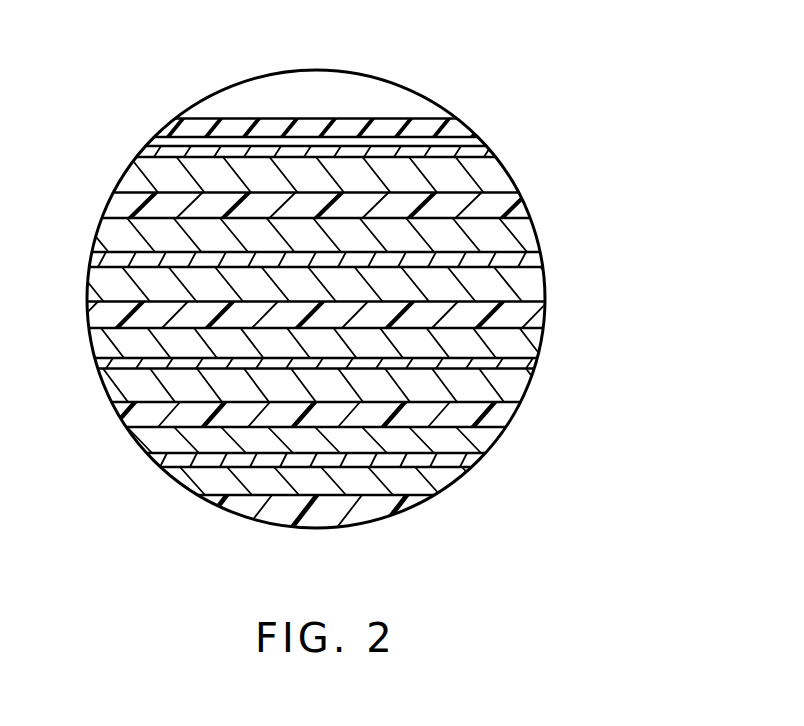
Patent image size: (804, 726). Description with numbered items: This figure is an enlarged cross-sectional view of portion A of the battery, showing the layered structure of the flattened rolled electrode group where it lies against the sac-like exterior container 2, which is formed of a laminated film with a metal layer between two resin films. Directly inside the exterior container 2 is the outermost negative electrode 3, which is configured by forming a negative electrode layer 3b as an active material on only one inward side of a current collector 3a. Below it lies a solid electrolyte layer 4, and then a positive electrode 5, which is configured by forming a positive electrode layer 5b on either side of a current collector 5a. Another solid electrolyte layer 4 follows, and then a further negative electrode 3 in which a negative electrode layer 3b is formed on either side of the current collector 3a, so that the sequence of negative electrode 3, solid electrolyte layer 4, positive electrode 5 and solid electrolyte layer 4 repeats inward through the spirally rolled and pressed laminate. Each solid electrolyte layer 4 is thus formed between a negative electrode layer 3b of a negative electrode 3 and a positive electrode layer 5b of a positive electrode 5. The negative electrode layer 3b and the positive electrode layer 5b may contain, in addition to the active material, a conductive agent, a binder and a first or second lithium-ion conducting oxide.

The portion A is at (208, 107).
The exterior container 2 is at (462, 126).
The negative electrode 3 is at (361, 270).
The current collector 3a is at (488, 151).
The negative electrode layer 3b is at (338, 293).
The solid electrolyte layer 4 is at (118, 203).
The positive electrode 5 is at (366, 382).
The current collector 5a is at (517, 260).
The positive electrode layer 5b is at (528, 227).